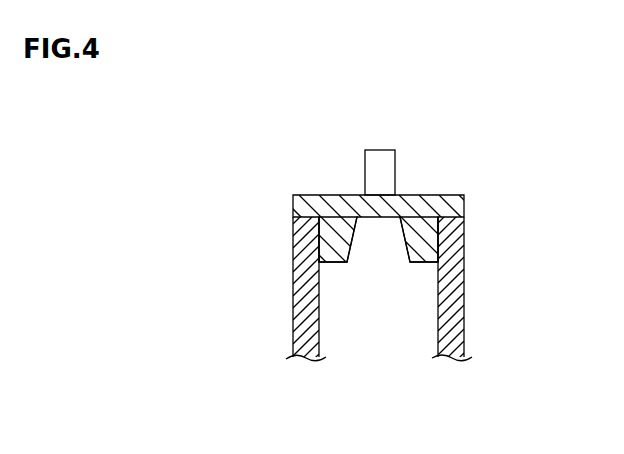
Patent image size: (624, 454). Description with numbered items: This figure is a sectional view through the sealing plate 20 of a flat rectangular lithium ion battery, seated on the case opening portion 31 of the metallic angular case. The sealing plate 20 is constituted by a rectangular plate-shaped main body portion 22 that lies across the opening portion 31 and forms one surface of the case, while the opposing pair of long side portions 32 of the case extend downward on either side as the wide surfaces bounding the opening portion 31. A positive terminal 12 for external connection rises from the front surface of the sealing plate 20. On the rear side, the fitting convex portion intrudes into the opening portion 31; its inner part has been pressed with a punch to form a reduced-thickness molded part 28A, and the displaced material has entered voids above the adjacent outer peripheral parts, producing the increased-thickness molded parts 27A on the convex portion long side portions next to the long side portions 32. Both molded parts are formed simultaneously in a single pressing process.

The positive terminal 12 is at (378, 150).
The sealing plate 20 is at (382, 187).
The main body portion 22 is at (427, 195).
The increased-thickness molded part 27A is at (325, 262).
The reduced-thickness molded part 28A is at (370, 217).
The case opening portion 31 is at (402, 275).
The long side portion 32 is at (292, 334).